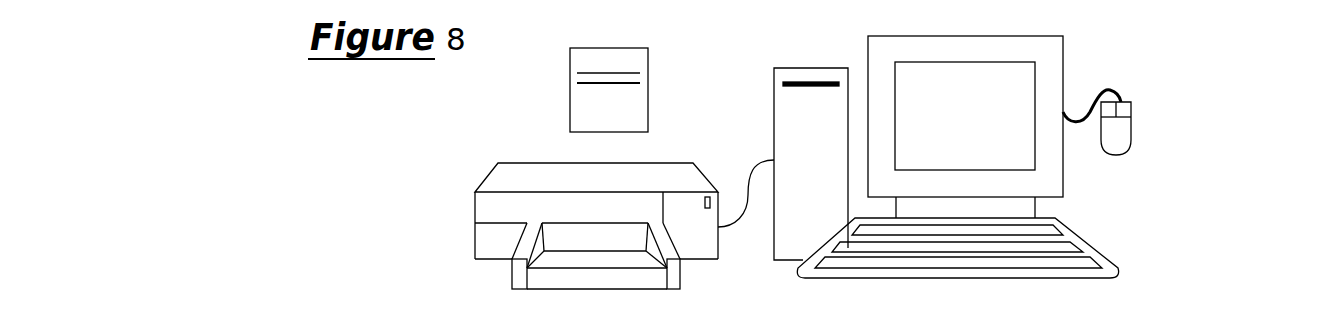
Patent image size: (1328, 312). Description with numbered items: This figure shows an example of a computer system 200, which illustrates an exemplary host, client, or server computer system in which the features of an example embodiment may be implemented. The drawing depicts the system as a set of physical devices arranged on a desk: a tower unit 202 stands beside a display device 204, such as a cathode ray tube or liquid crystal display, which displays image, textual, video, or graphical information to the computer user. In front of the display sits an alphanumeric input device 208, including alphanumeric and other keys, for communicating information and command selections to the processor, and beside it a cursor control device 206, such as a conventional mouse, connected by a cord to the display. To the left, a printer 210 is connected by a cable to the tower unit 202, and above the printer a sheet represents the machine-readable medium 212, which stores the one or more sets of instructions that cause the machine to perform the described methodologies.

The computer system 200 is at (1072, 17).
The computer tower / processing unit 202 is at (780, 140).
The display device 204 is at (1019, 127).
The cursor control device 206 is at (1163, 132).
The alphanumeric input device 208 is at (1007, 248).
The printer 210 is at (570, 221).
The machine-readable medium 212 is at (565, 90).